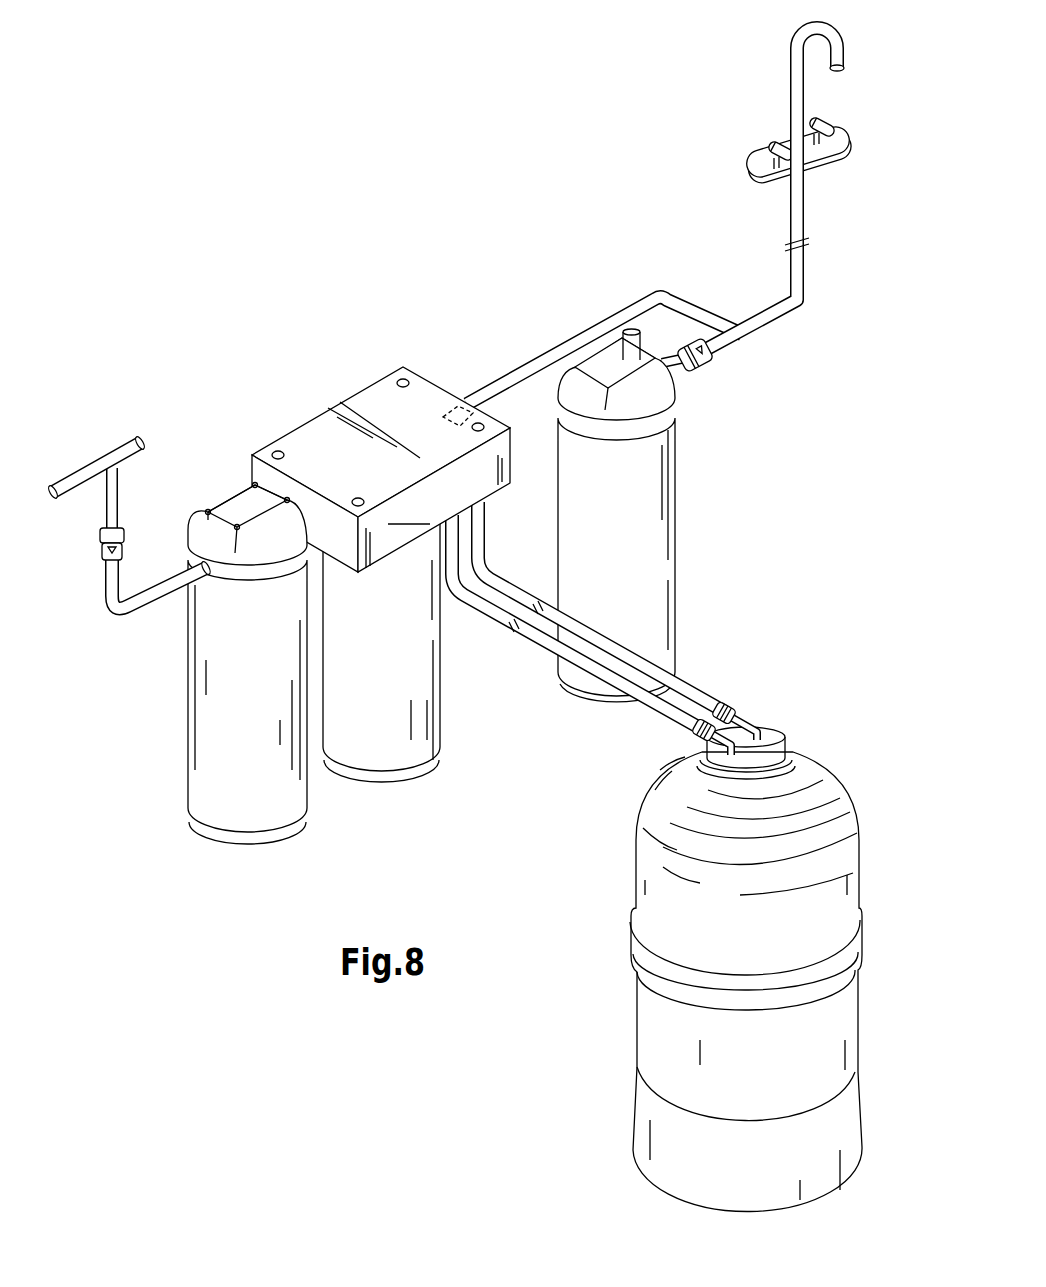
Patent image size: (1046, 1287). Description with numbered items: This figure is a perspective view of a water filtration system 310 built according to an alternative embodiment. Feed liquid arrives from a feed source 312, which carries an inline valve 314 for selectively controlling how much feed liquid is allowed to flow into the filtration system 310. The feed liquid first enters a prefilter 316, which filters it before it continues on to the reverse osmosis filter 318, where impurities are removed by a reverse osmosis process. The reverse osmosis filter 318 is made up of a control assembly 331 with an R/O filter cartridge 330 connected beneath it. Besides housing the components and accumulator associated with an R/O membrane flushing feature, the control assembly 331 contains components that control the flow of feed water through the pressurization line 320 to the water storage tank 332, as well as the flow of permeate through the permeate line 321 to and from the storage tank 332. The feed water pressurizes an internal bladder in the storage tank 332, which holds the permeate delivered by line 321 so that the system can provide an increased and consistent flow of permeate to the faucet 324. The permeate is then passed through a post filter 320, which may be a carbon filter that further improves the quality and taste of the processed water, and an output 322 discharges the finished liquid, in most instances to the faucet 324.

The water filtration system 310 is at (381, 399).
The feed source 312 is at (113, 498).
The inline valve 314 is at (100, 540).
The prefilter 316 is at (232, 499).
The reverse osmosis filter 318 is at (381, 451).
The post filter 320 is at (606, 355).
The permeate line 321 is at (693, 690).
The output 322 is at (748, 338).
The faucet 324 is at (807, 158).
The R/O filter cartridge 330 is at (383, 742).
The control assembly 331 is at (329, 420).
The water storage tank 332 is at (835, 897).